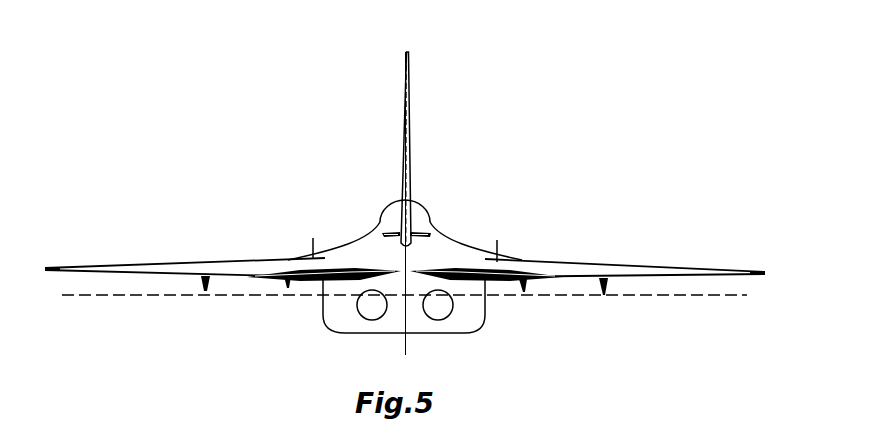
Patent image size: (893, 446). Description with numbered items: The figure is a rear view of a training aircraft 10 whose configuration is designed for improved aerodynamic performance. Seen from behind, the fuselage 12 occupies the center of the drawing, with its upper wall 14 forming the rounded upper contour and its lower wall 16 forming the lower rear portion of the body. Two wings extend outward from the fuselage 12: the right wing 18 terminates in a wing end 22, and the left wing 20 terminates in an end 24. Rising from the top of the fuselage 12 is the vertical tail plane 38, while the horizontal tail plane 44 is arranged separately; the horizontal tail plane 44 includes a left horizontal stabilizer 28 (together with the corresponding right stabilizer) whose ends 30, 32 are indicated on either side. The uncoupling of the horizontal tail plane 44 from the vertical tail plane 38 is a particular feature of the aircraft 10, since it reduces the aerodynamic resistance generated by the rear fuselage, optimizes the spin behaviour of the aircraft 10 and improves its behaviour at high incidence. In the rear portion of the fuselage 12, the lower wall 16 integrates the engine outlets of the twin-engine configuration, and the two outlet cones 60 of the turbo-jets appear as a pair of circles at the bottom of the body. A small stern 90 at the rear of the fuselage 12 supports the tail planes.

The aircraft 10 is at (504, 169).
The fuselage 12 is at (371, 227).
The upper wall 14 is at (423, 223).
The lower wall 16 is at (465, 322).
The right wing 18 is at (592, 266).
The left wing 20 is at (186, 262).
The wing end 22 is at (763, 272).
The end 24 is at (46, 267).
The left horizontal stabilizer 28 is at (272, 282).
The end 30 is at (575, 280).
The end 32 is at (252, 279).
The vertical tail plane 38 is at (411, 62).
The horizontal tail plane 44 is at (455, 266).
The outlet cones 60 is at (431, 314).
The small stern 90 is at (403, 268).